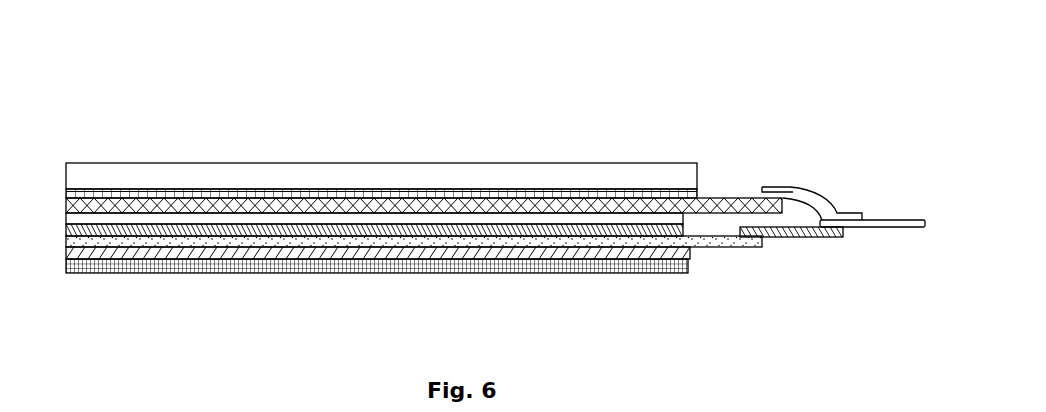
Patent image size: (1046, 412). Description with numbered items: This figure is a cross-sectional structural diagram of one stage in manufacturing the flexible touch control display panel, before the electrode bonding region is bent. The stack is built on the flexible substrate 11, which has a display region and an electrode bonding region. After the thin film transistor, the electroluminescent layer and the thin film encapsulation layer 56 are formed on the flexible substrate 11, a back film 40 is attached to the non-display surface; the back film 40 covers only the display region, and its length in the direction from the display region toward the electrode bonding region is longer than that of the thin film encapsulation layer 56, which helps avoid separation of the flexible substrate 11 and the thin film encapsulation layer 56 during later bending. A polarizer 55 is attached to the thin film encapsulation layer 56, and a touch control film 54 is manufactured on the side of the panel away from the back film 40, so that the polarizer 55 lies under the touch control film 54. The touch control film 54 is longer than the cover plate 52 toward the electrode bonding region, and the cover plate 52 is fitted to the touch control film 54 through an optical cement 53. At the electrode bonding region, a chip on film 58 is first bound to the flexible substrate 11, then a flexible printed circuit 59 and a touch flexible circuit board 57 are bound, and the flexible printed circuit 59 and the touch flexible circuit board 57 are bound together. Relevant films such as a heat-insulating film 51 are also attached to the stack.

The flexible substrate 11 is at (163, 243).
The back film 40 is at (290, 252).
The heat-insulating film 51 is at (450, 265).
The cover plate 52 is at (105, 163).
The optical cement 53 is at (202, 192).
The touch control film 54 is at (330, 200).
The polarizer 55 is at (472, 218).
The thin film encapsulation layer 56 is at (612, 230).
The touch flexible circuit board 57 is at (815, 193).
The chip on film 58 is at (793, 238).
The flexible printed circuit 59 is at (872, 228).